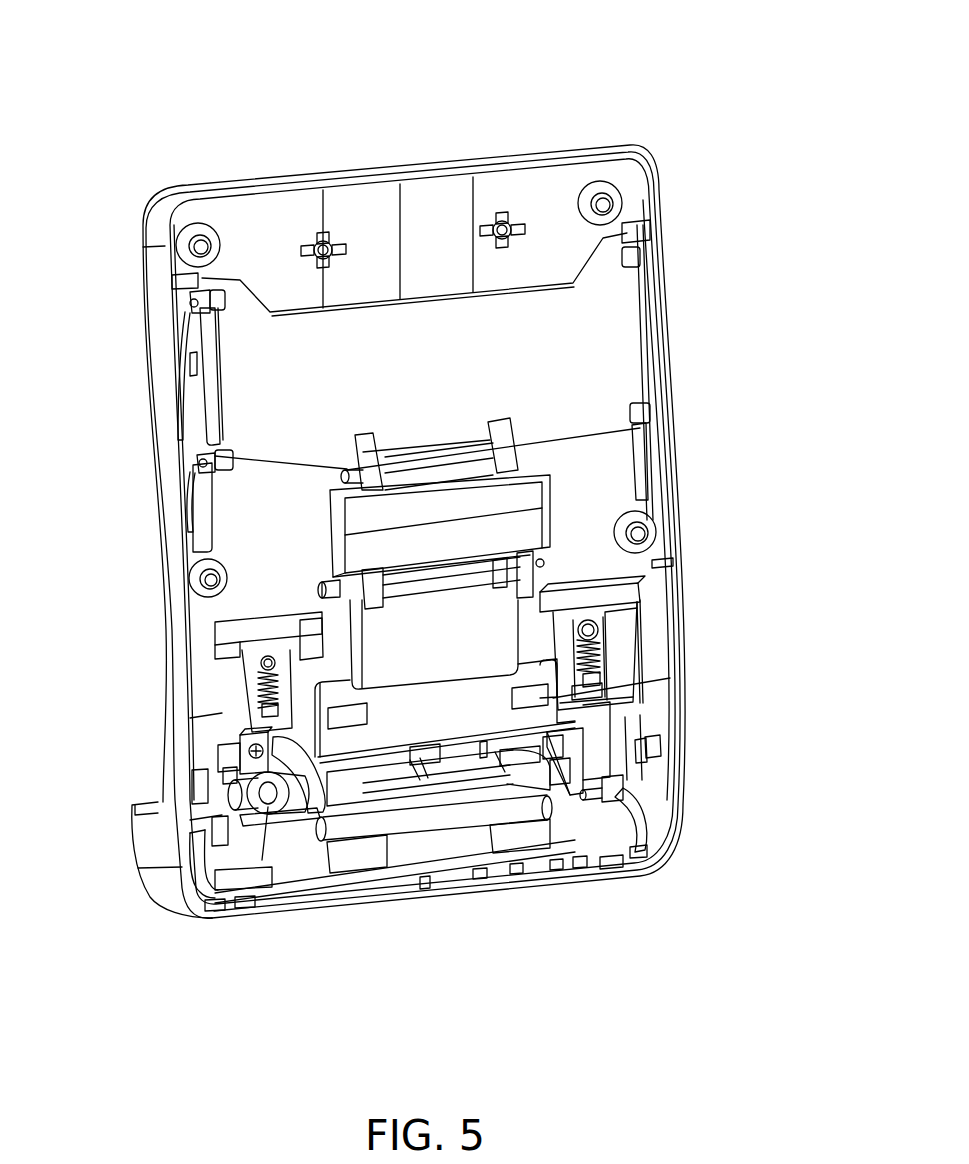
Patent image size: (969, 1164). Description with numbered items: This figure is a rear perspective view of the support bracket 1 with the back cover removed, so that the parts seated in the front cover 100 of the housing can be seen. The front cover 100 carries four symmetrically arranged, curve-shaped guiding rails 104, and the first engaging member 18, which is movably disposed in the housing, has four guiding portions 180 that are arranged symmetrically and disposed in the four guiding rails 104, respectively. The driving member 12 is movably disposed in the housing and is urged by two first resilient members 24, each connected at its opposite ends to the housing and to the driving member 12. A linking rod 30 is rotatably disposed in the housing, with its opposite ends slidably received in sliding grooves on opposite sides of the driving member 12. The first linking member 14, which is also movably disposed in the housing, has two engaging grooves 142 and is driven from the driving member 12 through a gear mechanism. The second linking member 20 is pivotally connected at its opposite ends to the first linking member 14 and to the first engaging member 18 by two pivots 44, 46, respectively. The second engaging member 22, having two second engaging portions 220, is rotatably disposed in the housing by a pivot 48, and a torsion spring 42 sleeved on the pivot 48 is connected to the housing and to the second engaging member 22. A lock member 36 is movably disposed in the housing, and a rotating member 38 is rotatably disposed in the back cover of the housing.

The support bracket 1 is at (305, 81).
The front cover 100 is at (530, 148).
The guiding rail 104 is at (177, 324).
The guiding portion 180 is at (190, 300).
The first engaging member 18 is at (612, 352).
The second linking member 20 is at (520, 492).
The pivot 46 is at (347, 470).
The pivot 44 is at (338, 588).
The lock member 36 is at (233, 733).
The rotating member 38 is at (283, 812).
The torsion spring 42 is at (412, 835).
The pivot 48 is at (427, 820).
The linking rod 30 is at (500, 863).
The first resilient member 24 is at (600, 647).
The driving member 12 is at (623, 662).
The engaging groove 142 is at (585, 700).
The first linking member 14 is at (540, 720).
The second engaging portion 220 is at (575, 812).
The second engaging member 22 is at (540, 810).